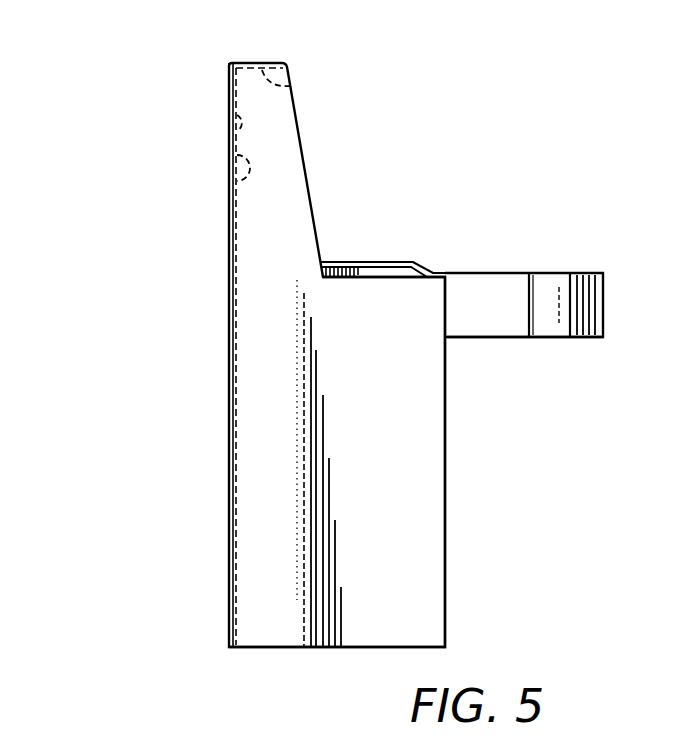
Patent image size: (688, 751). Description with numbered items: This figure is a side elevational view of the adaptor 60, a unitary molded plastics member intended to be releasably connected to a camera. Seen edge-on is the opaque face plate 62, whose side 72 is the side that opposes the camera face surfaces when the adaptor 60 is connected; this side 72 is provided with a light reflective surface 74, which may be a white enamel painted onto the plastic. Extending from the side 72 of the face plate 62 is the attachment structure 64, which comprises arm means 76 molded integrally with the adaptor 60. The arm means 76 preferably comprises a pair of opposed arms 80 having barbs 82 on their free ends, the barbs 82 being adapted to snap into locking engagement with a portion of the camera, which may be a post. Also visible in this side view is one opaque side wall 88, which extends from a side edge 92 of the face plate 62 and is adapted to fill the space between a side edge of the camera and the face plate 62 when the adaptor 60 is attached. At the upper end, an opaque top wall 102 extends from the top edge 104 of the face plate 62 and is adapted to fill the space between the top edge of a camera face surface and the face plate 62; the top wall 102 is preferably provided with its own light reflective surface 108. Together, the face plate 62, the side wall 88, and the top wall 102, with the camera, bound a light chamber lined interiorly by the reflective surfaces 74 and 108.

The adaptor 60 is at (337, 329).
The face plate 62 is at (228, 357).
The attachment structure 64 is at (469, 272).
The side of the face plate 72 is at (232, 117).
The light reflective surface 74 is at (232, 154).
The arm means 76 is at (478, 325).
The opposed arms 80 is at (517, 272).
The barbs 82 is at (573, 288).
The side wall 88 is at (425, 459).
The side edge of the face plate 92 is at (228, 418).
The top wall 102 is at (256, 63).
The top edge of the face plate 104 is at (228, 63).
The light reflective surface 108 is at (303, 85).